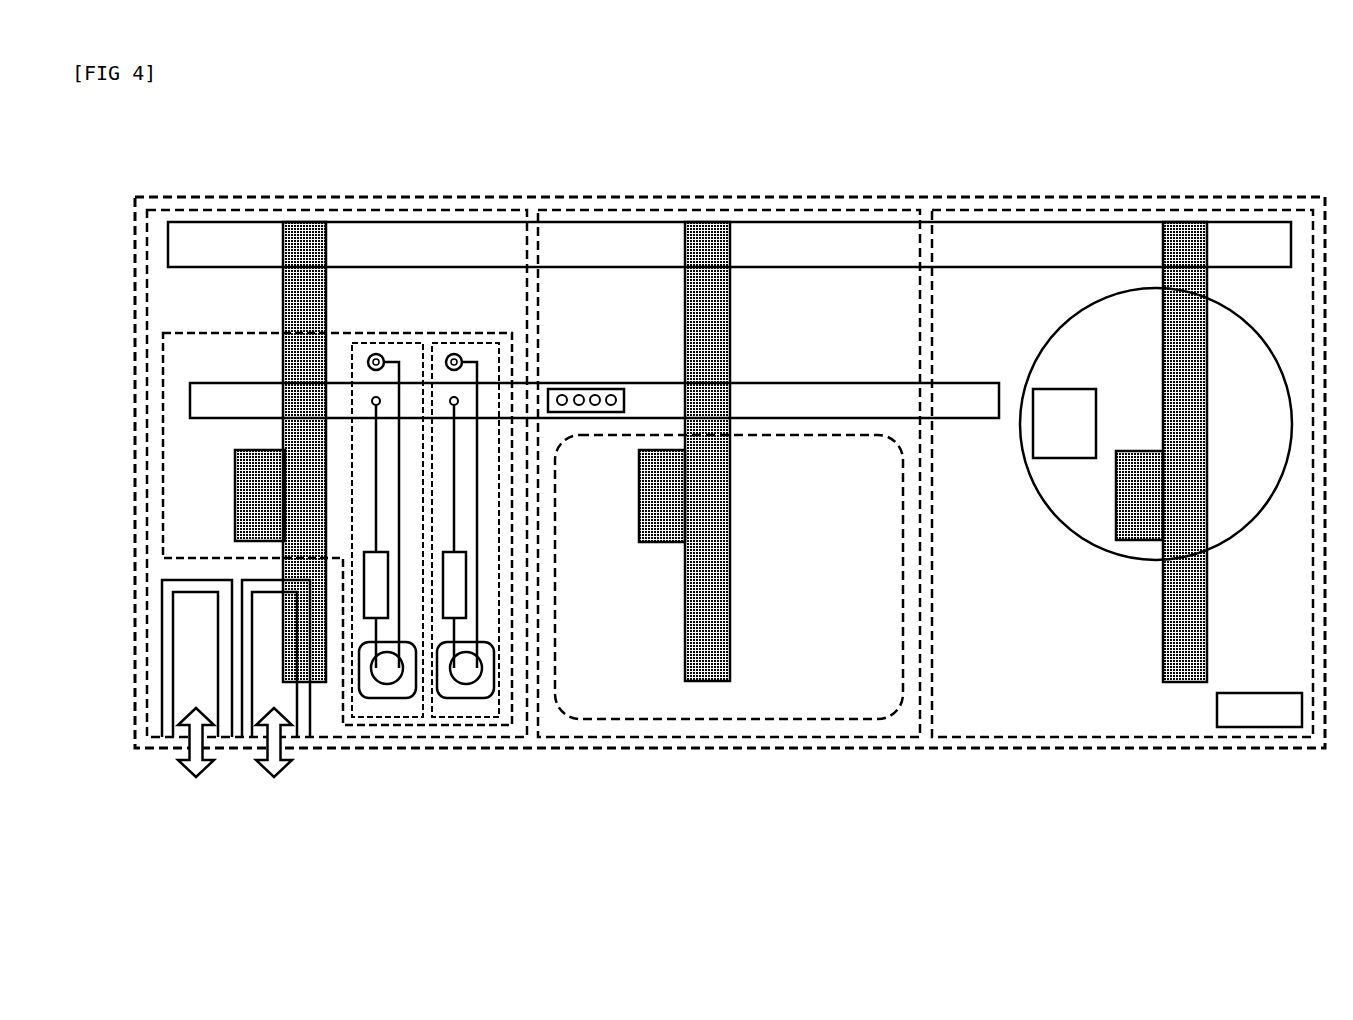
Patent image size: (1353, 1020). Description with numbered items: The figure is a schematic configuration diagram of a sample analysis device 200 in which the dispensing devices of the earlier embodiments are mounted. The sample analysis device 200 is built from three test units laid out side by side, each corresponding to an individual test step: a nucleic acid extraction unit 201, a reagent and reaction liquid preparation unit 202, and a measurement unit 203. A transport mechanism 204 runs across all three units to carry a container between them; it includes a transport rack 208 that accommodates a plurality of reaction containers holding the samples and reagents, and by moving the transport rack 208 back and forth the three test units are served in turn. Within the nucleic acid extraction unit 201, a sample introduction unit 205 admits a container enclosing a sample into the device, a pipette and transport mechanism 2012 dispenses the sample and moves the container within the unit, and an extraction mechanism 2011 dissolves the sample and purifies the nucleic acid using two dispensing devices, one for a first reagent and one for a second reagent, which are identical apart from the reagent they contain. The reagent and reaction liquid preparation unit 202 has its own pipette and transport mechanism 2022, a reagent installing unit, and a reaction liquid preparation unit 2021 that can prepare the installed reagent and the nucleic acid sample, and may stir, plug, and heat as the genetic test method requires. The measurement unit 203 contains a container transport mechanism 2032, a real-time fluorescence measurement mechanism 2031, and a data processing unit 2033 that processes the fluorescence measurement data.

The sample analysis device 200 is at (148, 197).
The nucleic acid extraction unit 201 is at (497, 210).
The reagent and reaction liquid preparation unit 202 is at (885, 210).
The measurement unit 203 is at (1290, 210).
The extraction mechanism 2011 is at (417, 333).
The pipette and transport mechanism 2012 is at (305, 222).
The pipette and transport mechanism 2022 is at (695, 222).
The container transport mechanism 2032 is at (1195, 222).
The transport mechanism 204 is at (852, 383).
The transport rack 208 is at (602, 389).
The sample introduction unit 205 is at (236, 696).
The reaction liquid preparation unit 2021 is at (677, 719).
The real-time fluorescence measurement mechanism 2031 is at (1082, 542).
The data processing unit 2033 is at (1260, 727).